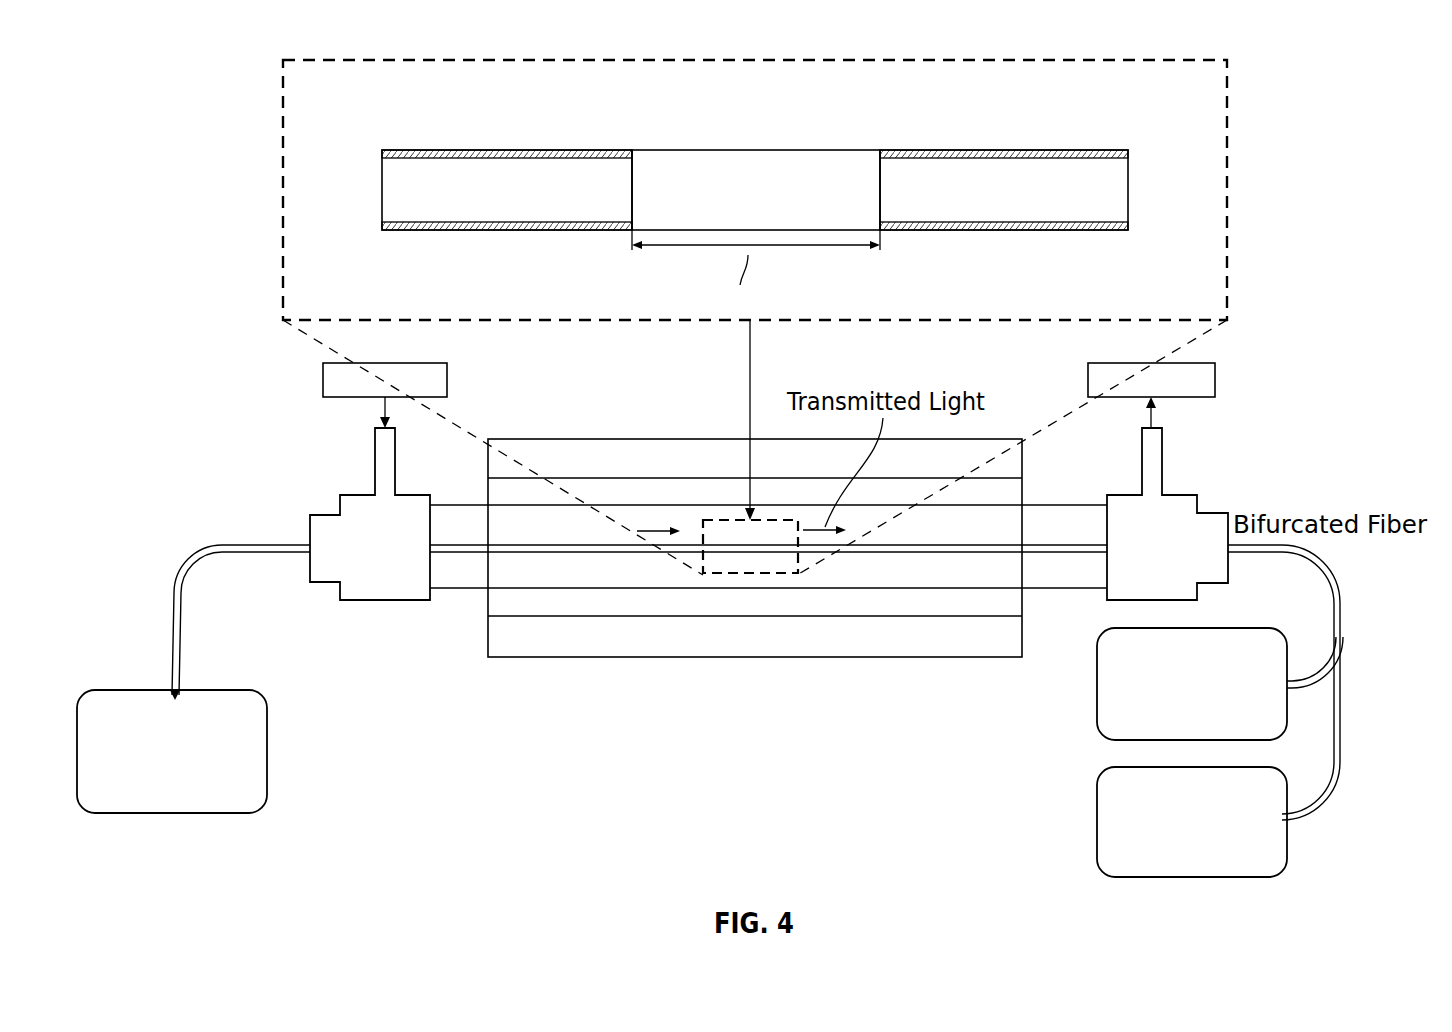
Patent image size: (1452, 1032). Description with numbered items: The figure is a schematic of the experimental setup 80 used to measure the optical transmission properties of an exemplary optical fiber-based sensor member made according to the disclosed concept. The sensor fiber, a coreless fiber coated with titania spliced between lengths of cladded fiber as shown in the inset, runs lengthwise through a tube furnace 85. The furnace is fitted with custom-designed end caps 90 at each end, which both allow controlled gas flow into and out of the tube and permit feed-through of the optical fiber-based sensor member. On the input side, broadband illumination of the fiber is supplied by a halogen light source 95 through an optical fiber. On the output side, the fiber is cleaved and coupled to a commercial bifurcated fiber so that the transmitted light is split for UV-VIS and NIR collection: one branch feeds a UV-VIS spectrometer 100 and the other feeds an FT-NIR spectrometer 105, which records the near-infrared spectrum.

The experimental setup 80 is at (1091, 45).
The tube furnace 85 is at (892, 659).
The end caps 90 is at (358, 507).
The halogen light source 95 is at (267, 752).
The UV-VIS spectrometer 100 is at (1097, 682).
The FT-NIR spectrometer 105 is at (1097, 822).